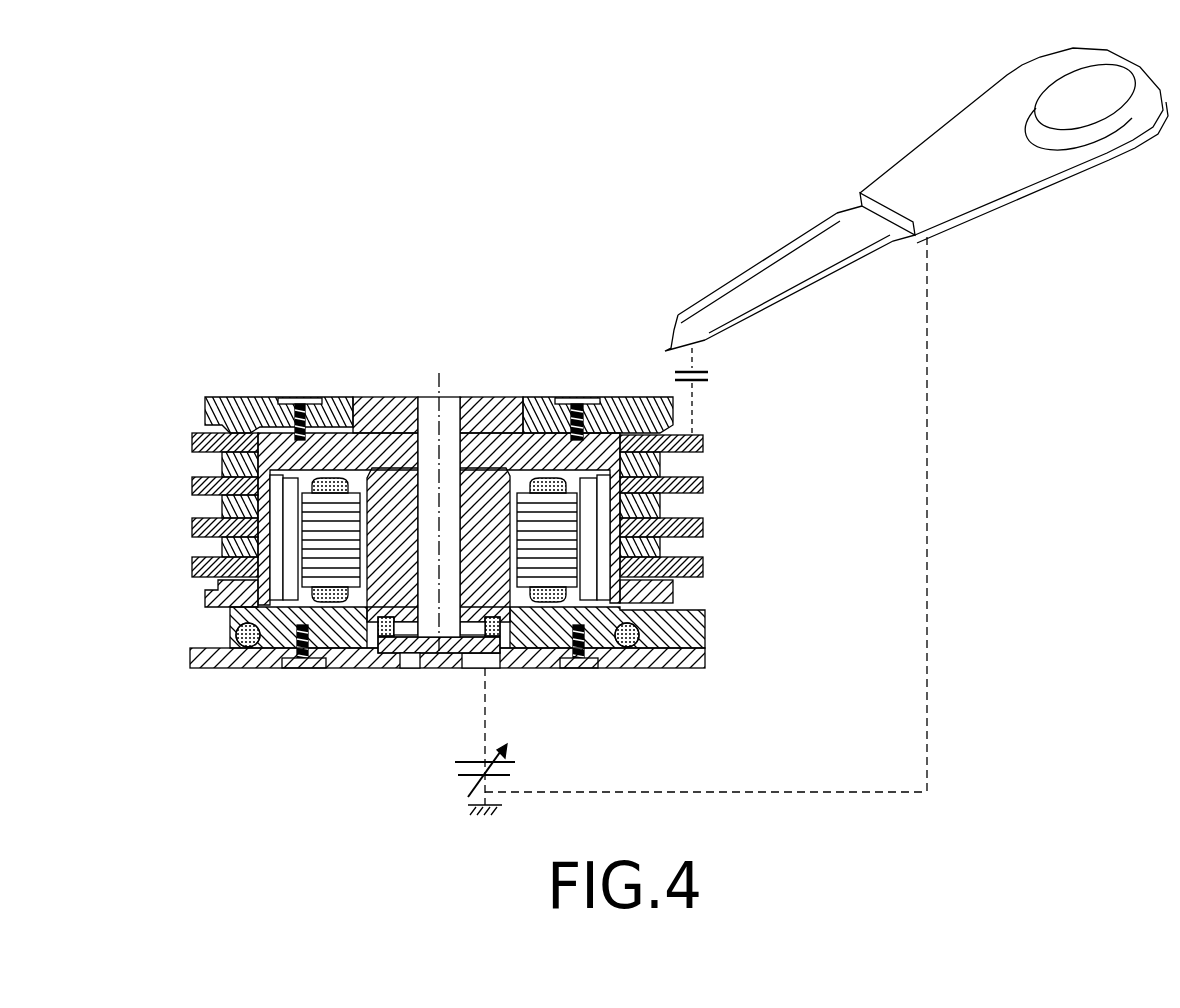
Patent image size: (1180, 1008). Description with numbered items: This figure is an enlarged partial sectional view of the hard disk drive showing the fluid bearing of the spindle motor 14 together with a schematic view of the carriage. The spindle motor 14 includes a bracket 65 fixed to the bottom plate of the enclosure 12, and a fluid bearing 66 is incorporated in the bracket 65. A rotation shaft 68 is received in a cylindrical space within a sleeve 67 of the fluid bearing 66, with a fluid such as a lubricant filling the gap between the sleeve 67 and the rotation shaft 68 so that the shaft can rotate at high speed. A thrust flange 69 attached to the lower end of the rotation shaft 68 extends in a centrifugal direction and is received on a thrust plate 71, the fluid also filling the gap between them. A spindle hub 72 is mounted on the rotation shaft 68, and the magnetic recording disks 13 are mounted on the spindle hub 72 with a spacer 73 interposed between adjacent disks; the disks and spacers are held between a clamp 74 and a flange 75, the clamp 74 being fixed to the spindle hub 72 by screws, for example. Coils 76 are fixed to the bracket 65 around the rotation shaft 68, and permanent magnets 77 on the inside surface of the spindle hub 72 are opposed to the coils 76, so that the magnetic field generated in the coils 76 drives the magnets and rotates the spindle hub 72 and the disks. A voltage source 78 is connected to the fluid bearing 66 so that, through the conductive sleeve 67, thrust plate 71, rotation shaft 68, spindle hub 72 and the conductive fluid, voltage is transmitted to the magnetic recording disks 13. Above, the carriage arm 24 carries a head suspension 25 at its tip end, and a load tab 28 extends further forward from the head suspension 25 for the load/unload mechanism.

The enclosure 12 is at (236, 668).
The magnetic recording disk 13 is at (700, 432).
The spindle motor 14 is at (332, 387).
The carriage arm 24 is at (942, 228).
The head suspension 25 is at (760, 317).
The load tab 28 is at (668, 346).
The bracket 65 is at (352, 670).
The fluid bearing 66 is at (400, 658).
The sleeve 67 is at (472, 465).
The rotation shaft 68 is at (441, 398).
The thrust flange 69 is at (488, 660).
The thrust plate 71 is at (440, 656).
The spindle hub 72 is at (387, 397).
The spacer 73 is at (220, 468).
The clamp 74 is at (205, 410).
The flange 75 is at (205, 597).
The coil 76 is at (317, 600).
The permanent magnet 77 is at (287, 478).
The voltage source 78 is at (462, 775).